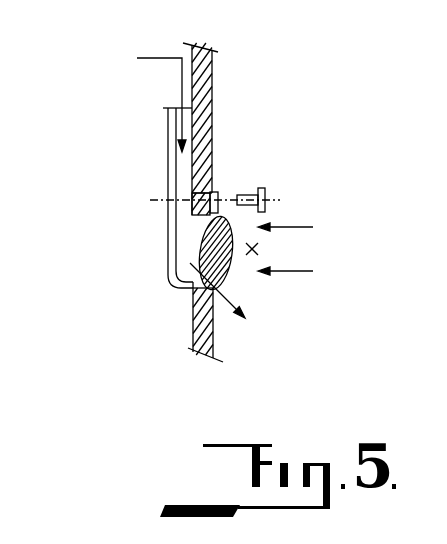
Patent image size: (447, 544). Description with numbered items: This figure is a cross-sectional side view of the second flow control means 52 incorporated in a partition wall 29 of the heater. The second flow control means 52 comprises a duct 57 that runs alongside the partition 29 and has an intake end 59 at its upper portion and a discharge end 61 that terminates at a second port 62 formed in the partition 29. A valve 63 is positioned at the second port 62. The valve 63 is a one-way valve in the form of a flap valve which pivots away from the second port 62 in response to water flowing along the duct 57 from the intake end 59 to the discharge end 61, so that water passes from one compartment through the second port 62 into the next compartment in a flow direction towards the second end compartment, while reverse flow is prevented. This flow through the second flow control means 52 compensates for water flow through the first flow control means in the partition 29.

The partition wall 29 is at (197, 325).
The second flow control means 52 is at (134, 205).
The duct 57 is at (167, 155).
The intake end 59 is at (182, 107).
The discharge end 61 is at (185, 230).
The second port 62 is at (185, 245).
The valve 63 is at (233, 270).